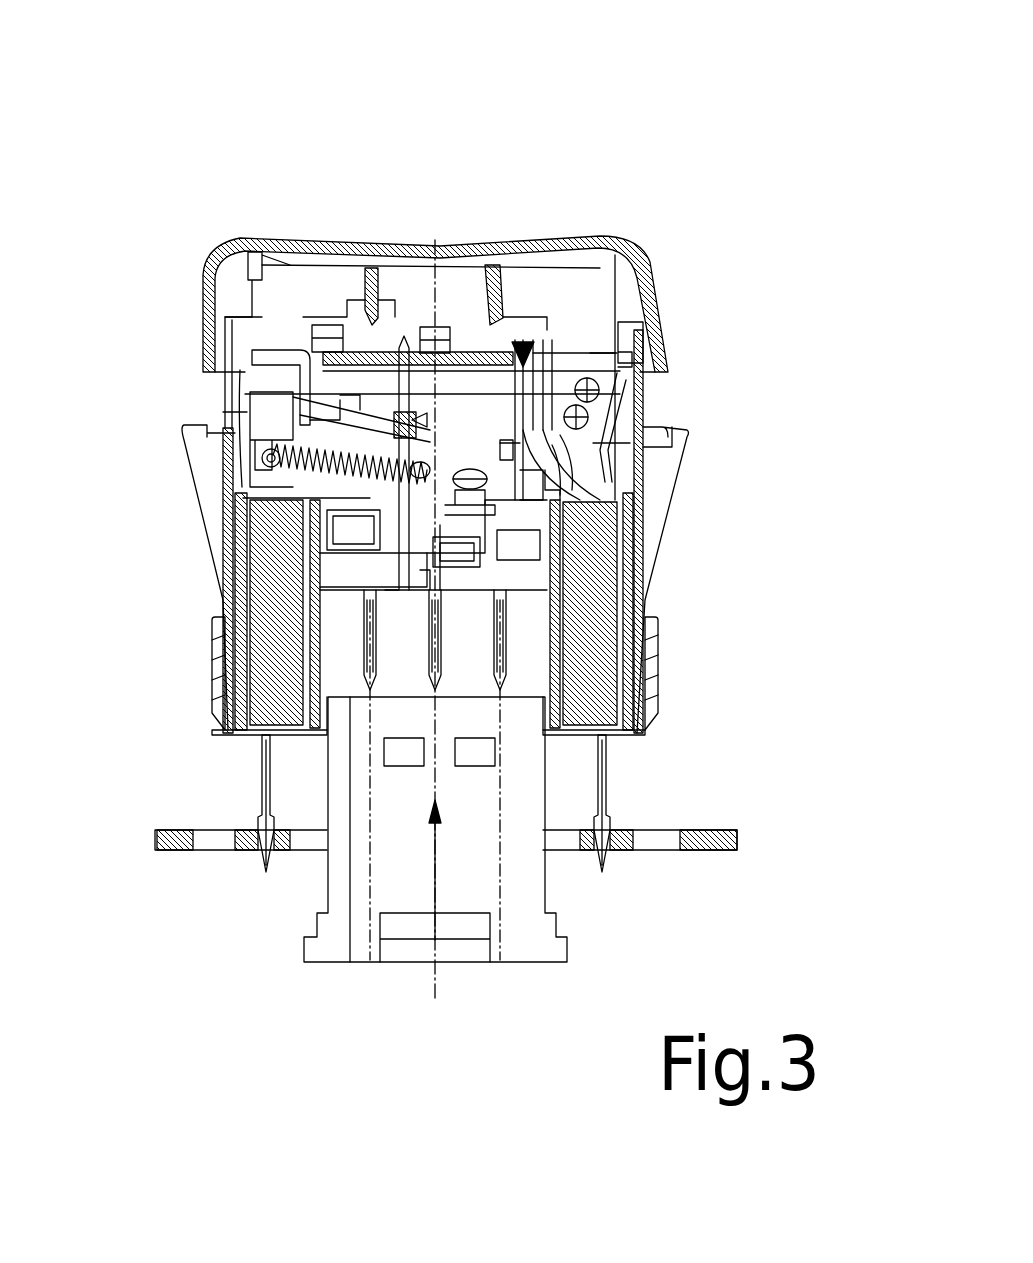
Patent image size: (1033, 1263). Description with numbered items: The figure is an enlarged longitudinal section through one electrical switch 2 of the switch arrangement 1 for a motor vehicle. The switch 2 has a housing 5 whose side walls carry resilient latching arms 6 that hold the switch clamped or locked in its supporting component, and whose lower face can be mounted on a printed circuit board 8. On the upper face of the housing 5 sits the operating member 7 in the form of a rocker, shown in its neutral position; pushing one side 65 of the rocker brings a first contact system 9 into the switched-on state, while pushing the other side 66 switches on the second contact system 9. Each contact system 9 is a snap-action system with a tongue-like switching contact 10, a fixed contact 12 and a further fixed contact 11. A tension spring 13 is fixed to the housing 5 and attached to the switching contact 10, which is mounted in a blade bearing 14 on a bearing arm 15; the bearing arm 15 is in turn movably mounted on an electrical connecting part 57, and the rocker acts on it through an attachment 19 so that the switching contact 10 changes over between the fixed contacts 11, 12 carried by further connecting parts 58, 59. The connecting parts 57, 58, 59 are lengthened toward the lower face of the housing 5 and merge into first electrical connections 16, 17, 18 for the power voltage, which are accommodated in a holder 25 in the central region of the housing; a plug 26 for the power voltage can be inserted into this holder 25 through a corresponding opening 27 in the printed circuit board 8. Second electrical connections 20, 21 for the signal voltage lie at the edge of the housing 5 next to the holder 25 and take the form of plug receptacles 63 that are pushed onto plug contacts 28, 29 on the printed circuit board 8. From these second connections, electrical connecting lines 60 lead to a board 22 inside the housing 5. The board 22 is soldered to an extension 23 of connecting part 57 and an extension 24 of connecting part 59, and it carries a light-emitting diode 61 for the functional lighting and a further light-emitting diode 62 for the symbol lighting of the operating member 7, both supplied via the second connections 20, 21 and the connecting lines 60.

The switch arrangement 1 is at (306, 446).
The electrical switch 2 is at (462, 416).
The housing 5 is at (640, 395).
The resilient latching arms 6 is at (182, 443).
The operating member 7 is at (552, 238).
The printed circuit board 8 is at (724, 852).
The contact system 9 is at (518, 348).
The switching contact 10 is at (558, 470).
The further fixed contact 11 is at (545, 492).
The fixed contact 12 is at (592, 382).
The tension spring 13 is at (265, 474).
The blade bearing 14 is at (346, 398).
The bearing arm 15 is at (250, 414).
The first electrical connection 16 is at (372, 652).
The first electrical connection 17 is at (430, 692).
The first electrical connection 18 is at (522, 636).
The attachment 19 is at (300, 325).
The second electrical connection 20 is at (260, 735).
The second electrical connection 21 is at (603, 736).
The board 22 is at (472, 350).
The extension 23 is at (320, 320).
The extension 24 is at (642, 232).
The holder 25 is at (560, 684).
The plug 26 is at (487, 862).
The opening 27 is at (315, 840).
The plug contact 28 is at (250, 835).
The plug contact 29 is at (606, 772).
The electrical connecting part 57 is at (405, 516).
The electrical connecting part 58 is at (405, 550).
The electrical connecting part 59 is at (590, 430).
The electrical connecting lines 60 is at (275, 373).
The light-emitting diode 61 is at (432, 327).
The light-emitting diode 62 is at (312, 262).
The plug receptacles 63 is at (287, 626).
The side of the rocker 65 is at (255, 232).
The other side of the rocker 66 is at (605, 232).